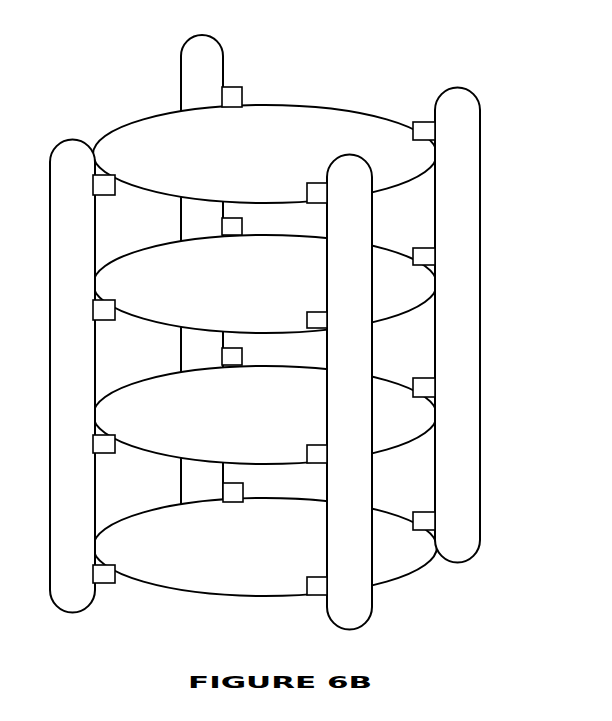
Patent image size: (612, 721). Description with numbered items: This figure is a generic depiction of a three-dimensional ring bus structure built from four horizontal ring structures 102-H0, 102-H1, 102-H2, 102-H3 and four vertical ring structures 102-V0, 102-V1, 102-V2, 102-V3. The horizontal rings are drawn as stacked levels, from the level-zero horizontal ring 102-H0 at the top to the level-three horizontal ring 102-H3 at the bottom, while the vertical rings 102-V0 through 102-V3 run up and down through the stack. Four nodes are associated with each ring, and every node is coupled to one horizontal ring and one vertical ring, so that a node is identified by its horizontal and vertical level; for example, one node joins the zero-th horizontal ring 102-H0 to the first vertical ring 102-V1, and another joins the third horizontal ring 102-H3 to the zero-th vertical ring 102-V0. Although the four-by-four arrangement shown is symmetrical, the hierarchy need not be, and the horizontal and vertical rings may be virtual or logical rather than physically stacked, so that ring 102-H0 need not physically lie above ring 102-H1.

The vertical ring structure 102-V0 is at (468, 107).
The vertical ring structure 102-V1 is at (192, 68).
The vertical ring structure 102-V2 is at (80, 607).
The vertical ring structure 102-V3 is at (360, 612).
The horizontal ring structure 102-H0 is at (147, 118).
The horizontal ring structure 102-H1 is at (176, 250).
The horizontal ring structure 102-H2 is at (177, 388).
The horizontal ring structure 102-H3 is at (177, 518).